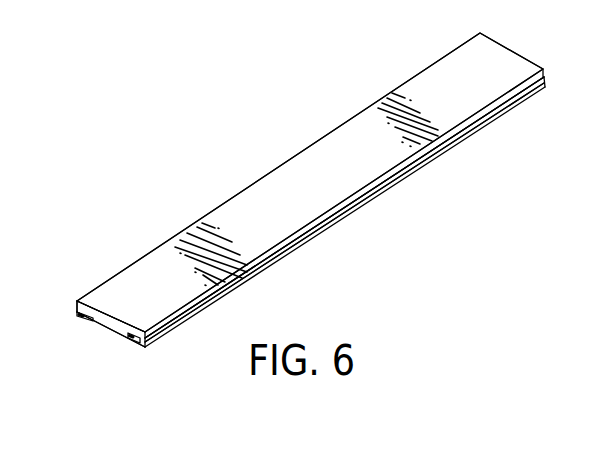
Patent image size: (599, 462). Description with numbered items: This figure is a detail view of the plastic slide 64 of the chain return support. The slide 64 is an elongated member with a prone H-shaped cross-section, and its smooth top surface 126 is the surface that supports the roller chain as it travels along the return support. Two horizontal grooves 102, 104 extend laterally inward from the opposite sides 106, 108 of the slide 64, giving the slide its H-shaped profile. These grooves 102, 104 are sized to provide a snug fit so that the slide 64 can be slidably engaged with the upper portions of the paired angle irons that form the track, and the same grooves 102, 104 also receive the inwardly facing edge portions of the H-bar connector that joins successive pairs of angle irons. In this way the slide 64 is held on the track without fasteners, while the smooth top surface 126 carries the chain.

The plastic slide 64 is at (275, 193).
The horizontal groove 102 is at (78, 315).
The horizontal groove 104 is at (135, 342).
The side of the slide 106 is at (77, 302).
The side of the slide 108 is at (167, 326).
The smooth top surface 126 is at (482, 62).